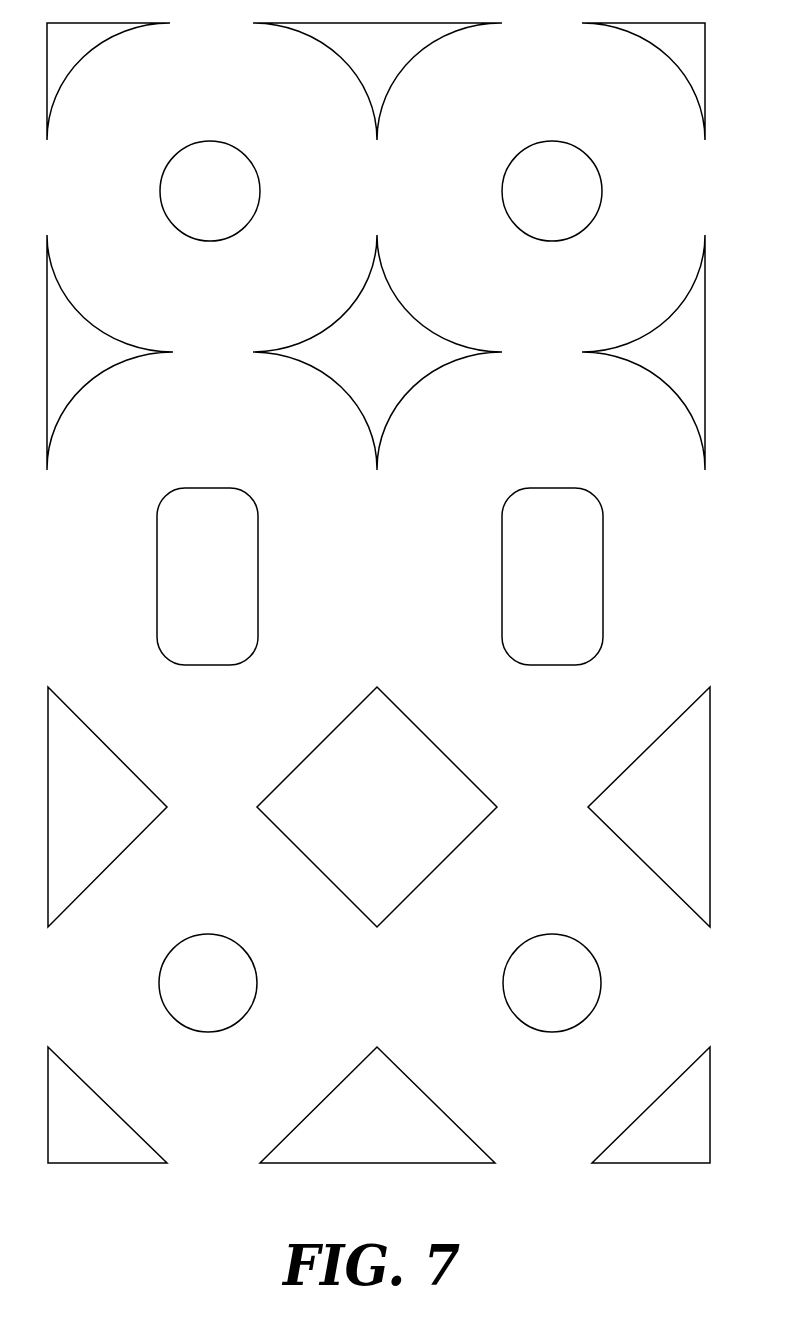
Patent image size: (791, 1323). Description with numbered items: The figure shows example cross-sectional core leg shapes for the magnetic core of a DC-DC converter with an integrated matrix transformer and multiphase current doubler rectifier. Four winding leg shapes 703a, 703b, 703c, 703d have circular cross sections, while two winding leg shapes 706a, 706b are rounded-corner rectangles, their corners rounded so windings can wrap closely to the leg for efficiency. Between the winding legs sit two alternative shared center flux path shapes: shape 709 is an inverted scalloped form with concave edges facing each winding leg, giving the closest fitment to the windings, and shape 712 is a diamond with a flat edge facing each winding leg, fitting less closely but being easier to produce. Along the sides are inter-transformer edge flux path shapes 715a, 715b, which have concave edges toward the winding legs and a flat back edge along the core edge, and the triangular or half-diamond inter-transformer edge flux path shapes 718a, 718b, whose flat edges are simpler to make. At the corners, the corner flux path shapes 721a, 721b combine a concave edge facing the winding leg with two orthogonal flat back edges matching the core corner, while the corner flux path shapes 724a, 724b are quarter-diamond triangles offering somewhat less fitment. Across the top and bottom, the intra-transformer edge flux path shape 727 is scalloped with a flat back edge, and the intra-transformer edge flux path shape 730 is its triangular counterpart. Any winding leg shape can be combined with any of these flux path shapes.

The winding leg shape 703a is at (233, 202).
The winding leg shape 703b is at (572, 202).
The winding leg shape 703c is at (233, 998).
The winding leg shape 703d is at (573, 998).
The winding leg shape 706a is at (234, 585).
The winding leg shape 706b is at (573, 585).
The shared center flux path shape 709 is at (397, 367).
The shared center flux path shape 712 is at (397, 820).
The inter-transformer edge flux path shape 715a is at (99, 365).
The inter-transformer edge flux path shape 715b is at (703, 362).
The inter-transformer edge flux path shape 718a is at (105, 820).
The inter-transformer edge flux path shape 718b is at (708, 817).
The corner flux path shape 721a is at (97, 52).
The corner flux path shape 721b is at (703, 50).
The corner flux path shape 724a is at (97, 1155).
The corner flux path shape 724b is at (708, 1148).
The intra-transformer edge flux path shape 727 is at (397, 60).
The intra-transformer edge flux path shape 730 is at (397, 1155).